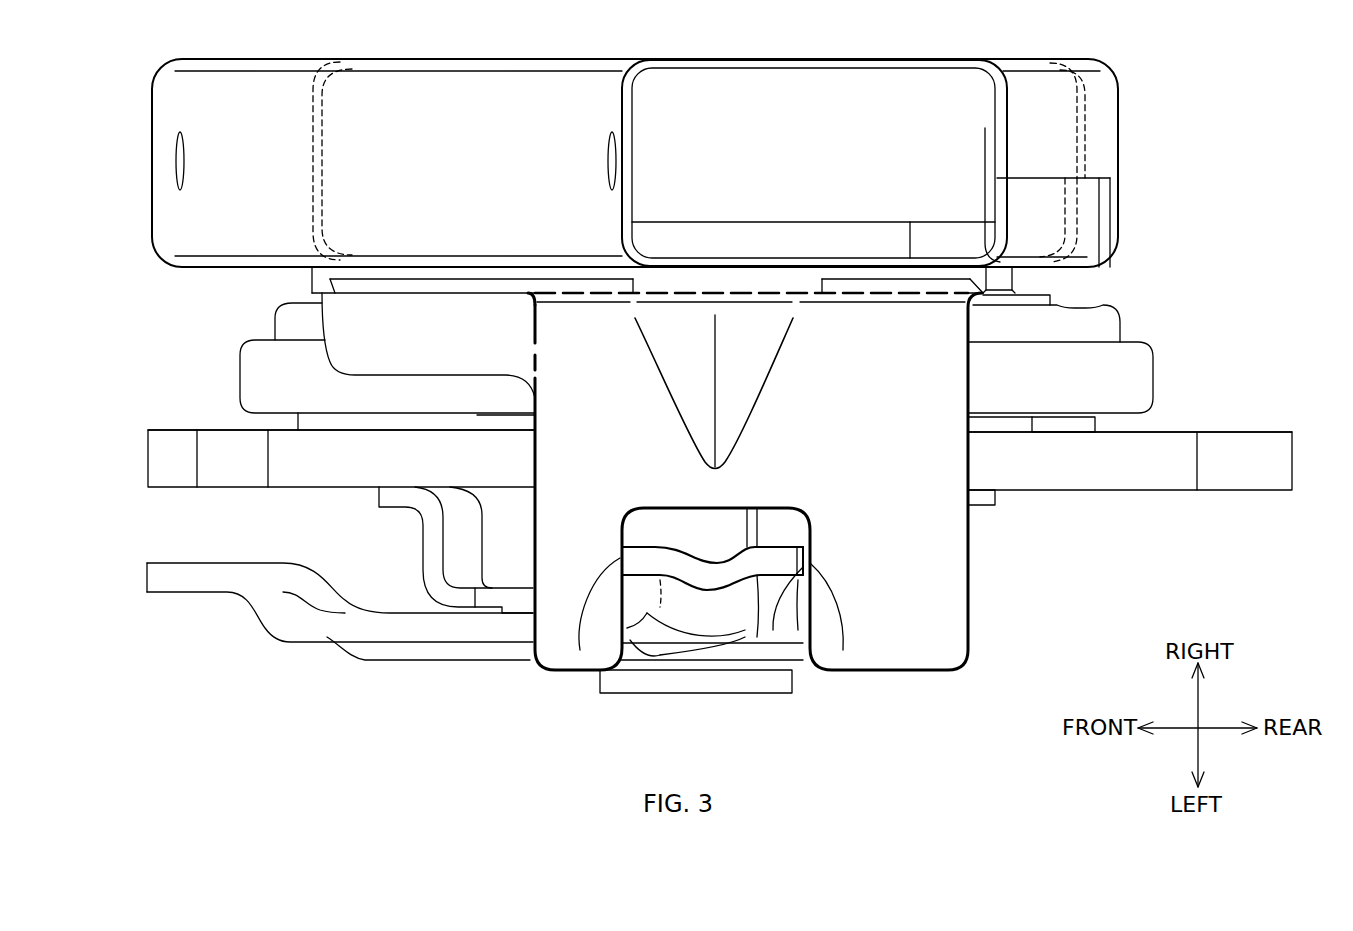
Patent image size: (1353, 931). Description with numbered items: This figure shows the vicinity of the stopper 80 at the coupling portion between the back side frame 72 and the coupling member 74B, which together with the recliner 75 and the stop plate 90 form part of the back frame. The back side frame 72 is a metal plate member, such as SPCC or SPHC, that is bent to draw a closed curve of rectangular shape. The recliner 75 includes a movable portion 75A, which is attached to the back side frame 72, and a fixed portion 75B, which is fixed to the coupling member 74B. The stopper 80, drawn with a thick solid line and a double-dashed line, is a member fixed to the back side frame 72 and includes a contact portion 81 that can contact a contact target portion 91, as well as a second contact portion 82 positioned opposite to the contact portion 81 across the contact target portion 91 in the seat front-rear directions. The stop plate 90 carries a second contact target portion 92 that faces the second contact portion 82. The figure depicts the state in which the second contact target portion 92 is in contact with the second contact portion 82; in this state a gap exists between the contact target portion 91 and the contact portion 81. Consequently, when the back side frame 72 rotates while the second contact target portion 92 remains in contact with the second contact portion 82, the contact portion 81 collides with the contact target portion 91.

The back side frame 72 is at (1105, 128).
The recliner 75 is at (1146, 328).
The movable portion 75A is at (1097, 306).
The fixed portion 75B is at (1133, 356).
The coupling member 74B is at (1158, 490).
The stopper 80 is at (968, 568).
The stop plate 90 is at (755, 643).
The contact target portion 91 is at (773, 630).
The second contact target portion 92 is at (623, 567).
The contact portion 81 is at (843, 650).
The second contact portion 82 is at (580, 650).